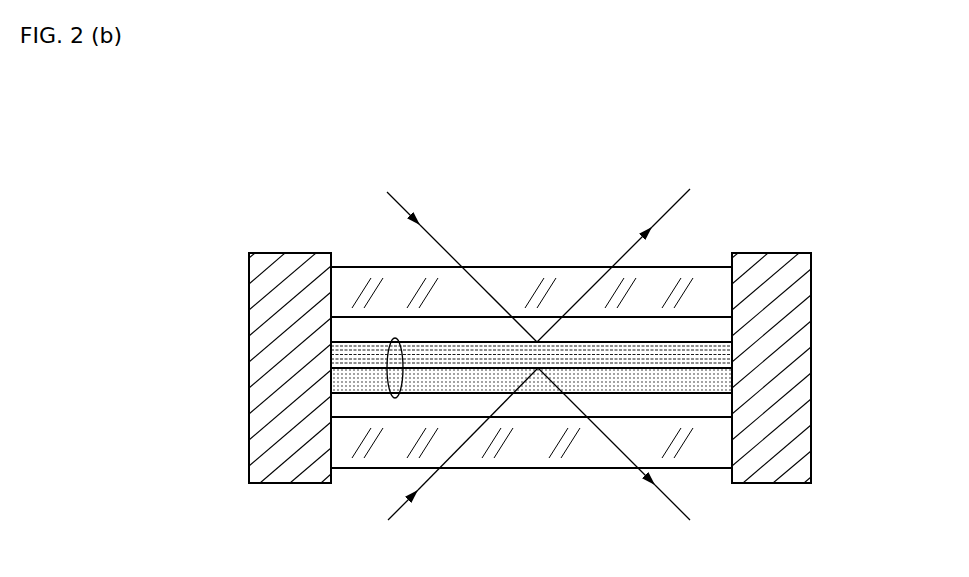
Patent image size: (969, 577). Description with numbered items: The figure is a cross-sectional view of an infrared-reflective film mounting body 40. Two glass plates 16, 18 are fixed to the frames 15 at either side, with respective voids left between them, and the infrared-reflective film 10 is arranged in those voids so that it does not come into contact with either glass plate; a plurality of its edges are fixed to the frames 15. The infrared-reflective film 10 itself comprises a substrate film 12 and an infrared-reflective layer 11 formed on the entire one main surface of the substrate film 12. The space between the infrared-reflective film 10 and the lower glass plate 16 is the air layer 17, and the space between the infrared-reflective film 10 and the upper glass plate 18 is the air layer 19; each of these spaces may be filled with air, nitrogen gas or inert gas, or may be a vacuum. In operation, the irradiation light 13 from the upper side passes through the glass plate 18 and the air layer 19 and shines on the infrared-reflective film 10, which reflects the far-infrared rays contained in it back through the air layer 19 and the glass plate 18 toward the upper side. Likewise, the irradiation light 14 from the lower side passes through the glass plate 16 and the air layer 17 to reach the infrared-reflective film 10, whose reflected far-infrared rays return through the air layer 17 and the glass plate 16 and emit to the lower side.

The infrared-reflective film 10 is at (396, 339).
The infrared-reflective layer 11 is at (478, 342).
The substrate film 12 is at (480, 394).
The irradiation light 13 is at (524, 256).
The irradiation light 14 is at (524, 456).
The frames 15 is at (249, 255).
The glass plate 16 is at (530, 470).
The air layer 17 is at (644, 405).
The glass plate 18 is at (532, 267).
The air layer 19 is at (644, 329).
The infrared-reflective film mounting body 40 is at (766, 194).